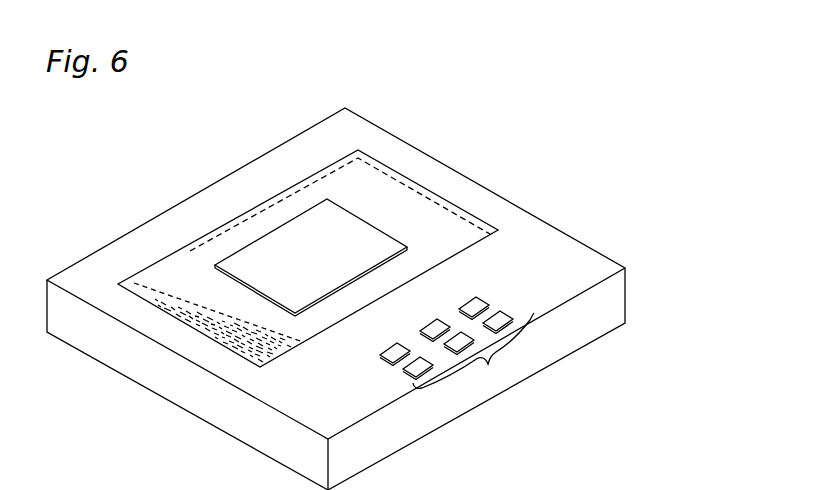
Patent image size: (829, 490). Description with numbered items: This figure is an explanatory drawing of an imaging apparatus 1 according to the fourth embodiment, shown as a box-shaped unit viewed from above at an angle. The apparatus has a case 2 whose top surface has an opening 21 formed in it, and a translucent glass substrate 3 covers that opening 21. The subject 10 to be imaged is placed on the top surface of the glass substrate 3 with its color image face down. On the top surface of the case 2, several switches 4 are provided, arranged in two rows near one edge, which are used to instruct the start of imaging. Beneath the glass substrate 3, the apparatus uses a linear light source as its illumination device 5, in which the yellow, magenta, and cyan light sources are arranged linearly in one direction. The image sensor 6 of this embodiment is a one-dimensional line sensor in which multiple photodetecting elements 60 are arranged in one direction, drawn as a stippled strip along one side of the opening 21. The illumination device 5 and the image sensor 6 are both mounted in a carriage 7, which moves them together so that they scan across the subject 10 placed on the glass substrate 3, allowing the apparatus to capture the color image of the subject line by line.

The imaging apparatus 1 is at (488, 160).
The case 2 is at (533, 216).
The glass substrate 3 is at (350, 177).
The switches 4 is at (488, 364).
The illumination device 5 is at (187, 250).
The image sensor 6 is at (203, 334).
The carriage 7 is at (224, 348).
The subject 10 is at (295, 233).
The opening 21 is at (380, 160).
The photodetecting elements 60 is at (150, 272).